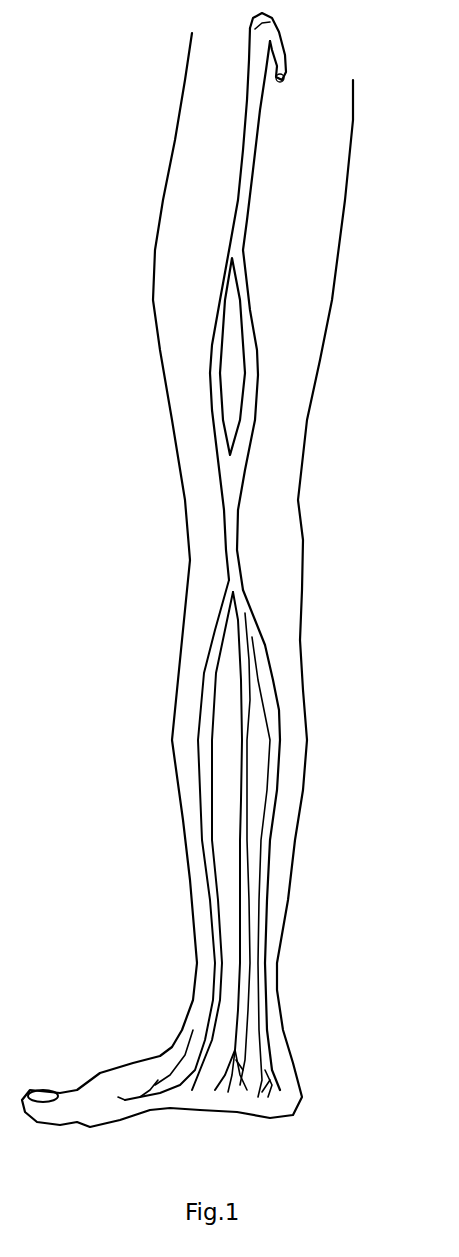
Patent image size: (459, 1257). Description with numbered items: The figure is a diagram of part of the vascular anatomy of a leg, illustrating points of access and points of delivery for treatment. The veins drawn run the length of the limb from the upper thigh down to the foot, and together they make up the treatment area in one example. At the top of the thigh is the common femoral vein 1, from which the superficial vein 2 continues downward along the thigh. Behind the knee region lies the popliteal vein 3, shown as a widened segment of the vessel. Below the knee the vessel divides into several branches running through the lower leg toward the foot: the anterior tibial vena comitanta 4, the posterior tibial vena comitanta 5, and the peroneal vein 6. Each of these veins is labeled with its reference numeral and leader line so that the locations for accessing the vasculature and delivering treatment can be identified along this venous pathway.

The common femoral vein 1 is at (161, 71).
The superficial vein 2 is at (146, 309).
The popliteal vein 3 is at (141, 356).
The anterior tibial vena comitanta 4 is at (138, 840).
The posterior tibial vena comitanta 5 is at (159, 844).
The peroneal vein 6 is at (316, 843).